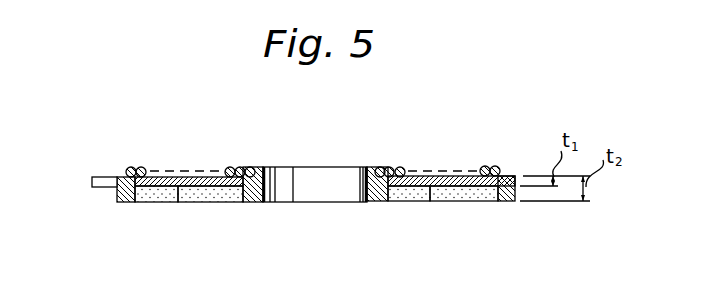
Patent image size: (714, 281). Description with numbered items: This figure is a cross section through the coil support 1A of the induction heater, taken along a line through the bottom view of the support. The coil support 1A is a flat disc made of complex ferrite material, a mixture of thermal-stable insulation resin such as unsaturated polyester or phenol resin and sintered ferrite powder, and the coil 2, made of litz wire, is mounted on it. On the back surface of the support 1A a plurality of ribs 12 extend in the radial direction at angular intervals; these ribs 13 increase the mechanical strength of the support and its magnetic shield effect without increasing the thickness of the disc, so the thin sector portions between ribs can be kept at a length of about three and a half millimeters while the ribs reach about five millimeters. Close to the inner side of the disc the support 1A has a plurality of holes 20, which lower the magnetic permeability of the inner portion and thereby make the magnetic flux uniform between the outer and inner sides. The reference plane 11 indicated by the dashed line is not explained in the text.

The coil support 1A is at (113, 203).
The coil 2 is at (487, 167).
The reference plane of hub surface 11 is at (423, 168).
The ribs 12 is at (220, 203).
The ribs 13 is at (180, 203).
The holes 20 is at (225, 168).